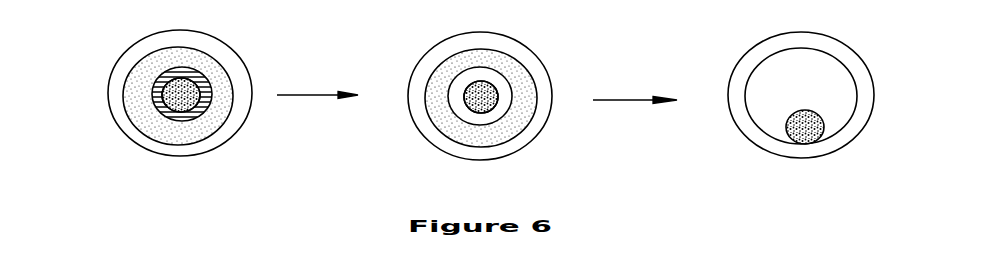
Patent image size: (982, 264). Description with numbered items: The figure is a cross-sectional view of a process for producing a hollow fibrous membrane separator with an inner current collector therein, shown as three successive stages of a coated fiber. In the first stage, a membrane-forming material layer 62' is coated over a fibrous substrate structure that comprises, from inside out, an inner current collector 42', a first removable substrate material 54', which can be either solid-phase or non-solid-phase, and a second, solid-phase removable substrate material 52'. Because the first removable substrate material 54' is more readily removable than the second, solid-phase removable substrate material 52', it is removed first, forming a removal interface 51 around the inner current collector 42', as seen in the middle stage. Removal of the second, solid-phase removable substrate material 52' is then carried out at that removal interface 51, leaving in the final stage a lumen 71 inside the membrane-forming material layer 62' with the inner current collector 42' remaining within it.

The membrane-forming material layer 62' is at (457, 95).
The second, solid-phase removable substrate material 52' is at (457, 98).
The first removable substrate material 54' is at (222, 80).
The inner current collector 42' is at (523, 132).
The removal interface 51 is at (493, 80).
The lumen 71 is at (806, 97).